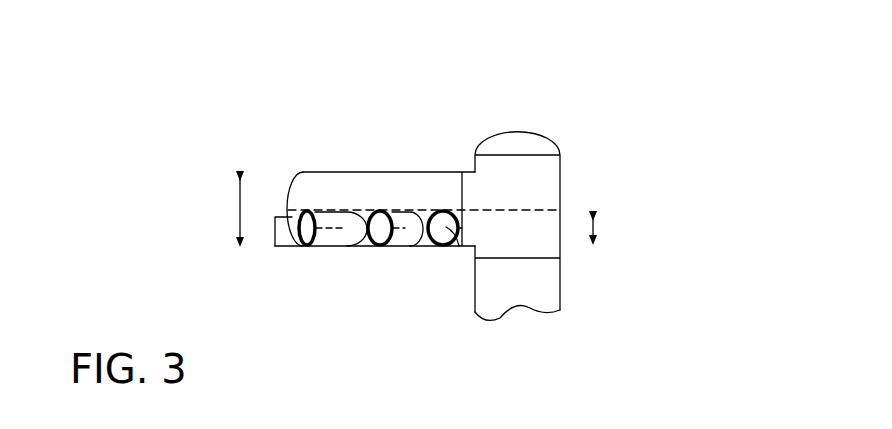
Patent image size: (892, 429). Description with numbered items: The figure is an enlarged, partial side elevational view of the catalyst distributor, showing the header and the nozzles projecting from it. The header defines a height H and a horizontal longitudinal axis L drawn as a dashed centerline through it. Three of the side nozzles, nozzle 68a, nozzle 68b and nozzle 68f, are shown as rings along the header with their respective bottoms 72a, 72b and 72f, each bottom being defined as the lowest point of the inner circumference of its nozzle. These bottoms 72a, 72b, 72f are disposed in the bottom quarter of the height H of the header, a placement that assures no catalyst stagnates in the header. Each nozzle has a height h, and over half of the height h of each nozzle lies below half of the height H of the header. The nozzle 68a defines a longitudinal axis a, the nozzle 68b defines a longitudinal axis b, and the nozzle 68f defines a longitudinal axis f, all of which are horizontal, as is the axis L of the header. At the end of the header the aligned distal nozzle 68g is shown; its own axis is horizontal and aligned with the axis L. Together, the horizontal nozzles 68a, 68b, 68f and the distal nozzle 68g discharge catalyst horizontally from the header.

The nozzle 68a is at (327, 235).
The nozzle 68b is at (395, 232).
The nozzle 68f is at (432, 238).
The distal nozzle 68g is at (273, 237).
The bottom 72a is at (307, 244).
The bottom 72b is at (375, 244).
The bottom 72f is at (438, 244).
The height of the header H is at (238, 195).
The height of the nozzle h is at (595, 227).
The longitudinal axis of the header L is at (527, 210).
The longitudinal axis a is at (327, 230).
The longitudinal axis b is at (402, 230).
The longitudinal axis f is at (444, 233).